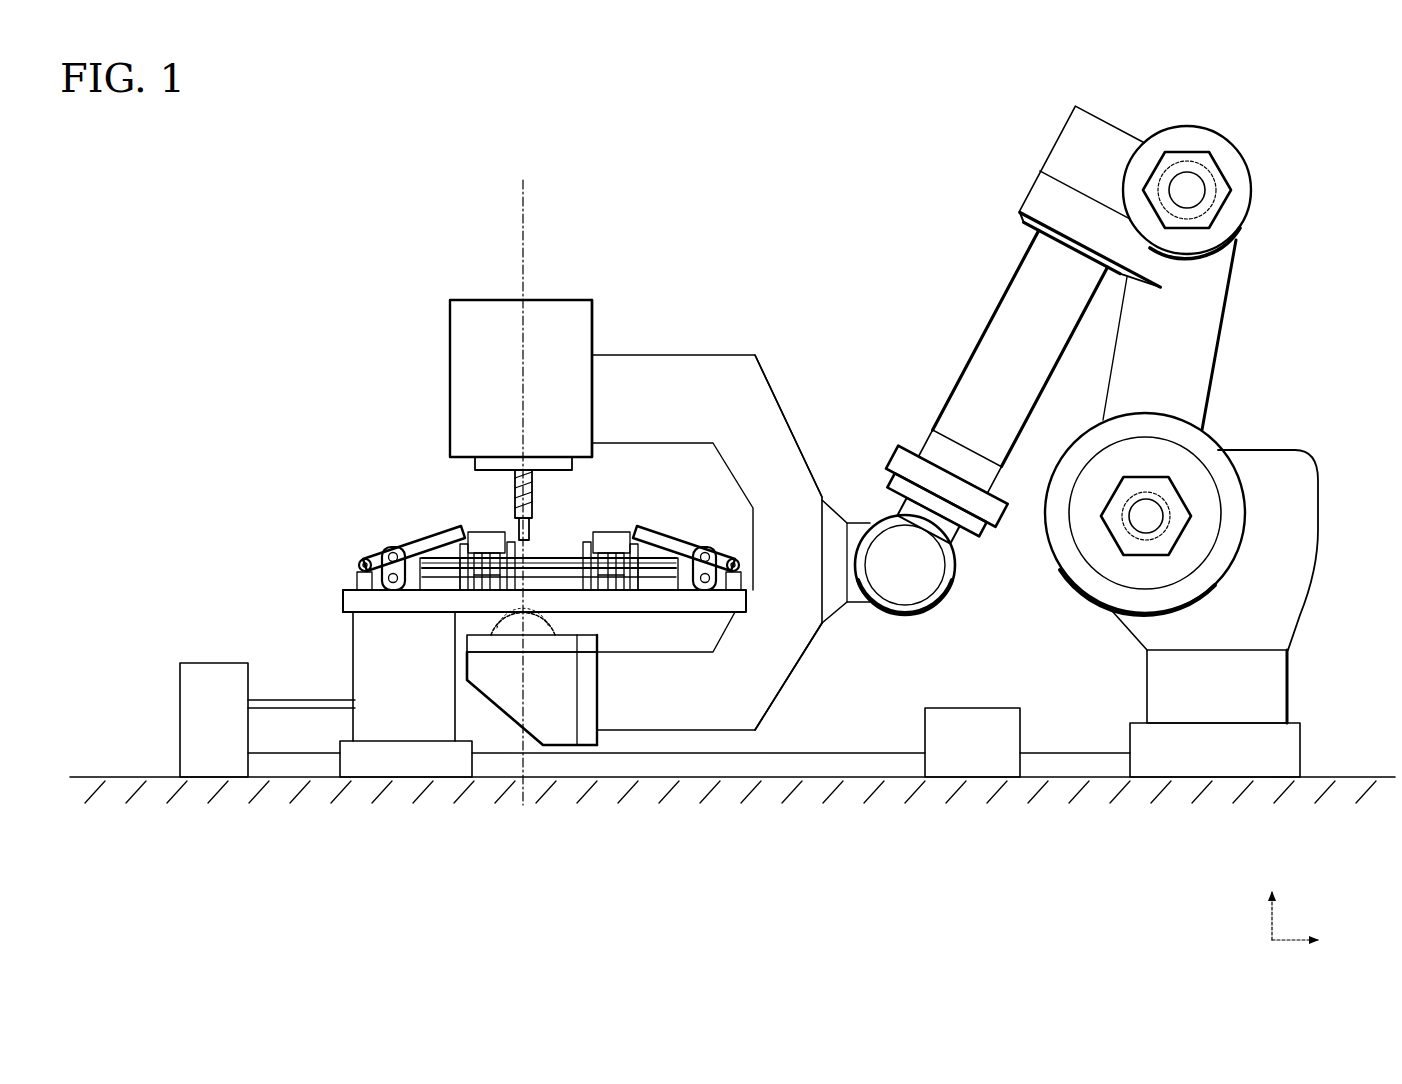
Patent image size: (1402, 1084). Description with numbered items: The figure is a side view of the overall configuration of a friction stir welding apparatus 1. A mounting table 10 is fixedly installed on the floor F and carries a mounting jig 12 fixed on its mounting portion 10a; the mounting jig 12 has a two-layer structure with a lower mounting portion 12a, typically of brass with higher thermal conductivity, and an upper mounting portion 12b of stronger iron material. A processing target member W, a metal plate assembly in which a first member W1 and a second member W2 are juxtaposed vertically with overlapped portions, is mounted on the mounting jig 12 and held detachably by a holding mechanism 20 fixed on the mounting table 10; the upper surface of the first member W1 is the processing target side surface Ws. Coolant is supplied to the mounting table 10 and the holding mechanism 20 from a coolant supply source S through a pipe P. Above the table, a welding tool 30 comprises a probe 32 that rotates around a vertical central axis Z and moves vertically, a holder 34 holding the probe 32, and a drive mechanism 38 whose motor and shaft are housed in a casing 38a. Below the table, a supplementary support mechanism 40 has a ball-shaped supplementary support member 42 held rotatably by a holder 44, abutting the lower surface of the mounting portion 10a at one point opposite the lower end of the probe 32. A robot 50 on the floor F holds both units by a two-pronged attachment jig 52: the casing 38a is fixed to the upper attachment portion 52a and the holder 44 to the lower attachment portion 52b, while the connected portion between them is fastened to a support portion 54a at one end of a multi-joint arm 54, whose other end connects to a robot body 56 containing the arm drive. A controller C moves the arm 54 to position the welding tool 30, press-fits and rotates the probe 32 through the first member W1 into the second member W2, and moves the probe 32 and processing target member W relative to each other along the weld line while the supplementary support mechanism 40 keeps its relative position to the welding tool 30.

The friction stir welding apparatus 1 is at (740, 190).
The mounting table 10 is at (514, 664).
The mounting portion 10a is at (362, 599).
The mounting jig 12 is at (648, 612).
The lower mounting portion 12a is at (565, 640).
The upper mounting portion 12b is at (438, 578).
The holding mechanism 20 is at (700, 508).
The welding tool 30 is at (522, 390).
The probe 32 is at (545, 503).
The holder 34 is at (478, 462).
The drive mechanism 38 is at (564, 348).
The casing 38a is at (584, 322).
The supplementary support mechanism 40 is at (531, 729).
The supplementary support member 42 is at (509, 640).
The holder 44 is at (516, 698).
The robot 50 is at (977, 441).
The attachment jig 52 is at (728, 506).
The upper attachment portion 52a is at (787, 460).
The lower attachment portion 52b is at (778, 660).
The arm 54 is at (935, 272).
The support portion 54a is at (832, 606).
The robot body 56 is at (1285, 478).
The coolant supply source S is at (222, 672).
The pipe P is at (305, 700).
The controller C is at (970, 712).
The floor F is at (1322, 777).
The processing target member W is at (573, 547).
The processing target side surface Ws is at (537, 550).
The first member W1 is at (499, 601).
The second member W2 is at (549, 640).
The central axis Z is at (524, 232).